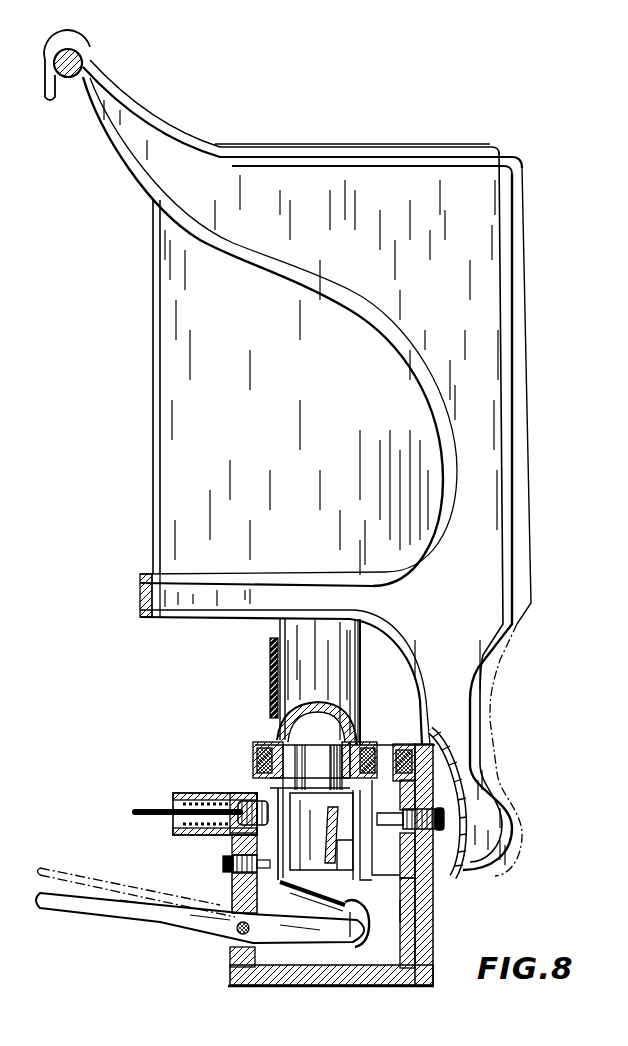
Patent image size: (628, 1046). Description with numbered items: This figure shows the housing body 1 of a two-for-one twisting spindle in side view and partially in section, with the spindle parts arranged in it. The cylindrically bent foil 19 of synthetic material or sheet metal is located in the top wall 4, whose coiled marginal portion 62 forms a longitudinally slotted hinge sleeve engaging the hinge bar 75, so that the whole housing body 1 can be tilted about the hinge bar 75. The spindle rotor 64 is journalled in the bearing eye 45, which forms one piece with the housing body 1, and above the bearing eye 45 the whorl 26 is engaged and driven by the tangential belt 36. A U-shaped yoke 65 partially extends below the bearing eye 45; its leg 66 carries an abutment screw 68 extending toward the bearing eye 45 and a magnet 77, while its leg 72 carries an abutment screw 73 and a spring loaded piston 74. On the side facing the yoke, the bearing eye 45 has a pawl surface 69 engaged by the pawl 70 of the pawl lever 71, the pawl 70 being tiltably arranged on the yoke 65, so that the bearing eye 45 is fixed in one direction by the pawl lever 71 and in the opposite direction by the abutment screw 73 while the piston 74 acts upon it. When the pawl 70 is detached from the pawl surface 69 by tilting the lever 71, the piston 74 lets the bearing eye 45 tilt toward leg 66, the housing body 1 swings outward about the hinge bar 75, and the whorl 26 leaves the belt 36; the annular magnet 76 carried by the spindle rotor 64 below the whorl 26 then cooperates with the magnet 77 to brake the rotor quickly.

The housing body 1 is at (536, 312).
The top wall 4 is at (302, 150).
The cylindrically bent foil 19 is at (178, 382).
The coiled portion 62 is at (77, 43).
The hinge bar 75 is at (65, 42).
The whorl 26 is at (300, 630).
The tangential belt 36 is at (270, 663).
The spindle rotor 64 is at (232, 684).
The leg 66 is at (423, 888).
The abutment screw 68 is at (437, 805).
The pawl surface 69 is at (370, 892).
The pawl 70 is at (353, 933).
The pawl lever 71 is at (133, 917).
The leg 72 is at (243, 890).
The abutment screw 73 is at (230, 868).
The spring loaded piston 74 is at (245, 803).
The annular magnet 76 is at (373, 748).
The magnet 77 is at (447, 752).
The bearing eye 45 is at (290, 835).
The U-shaped yoke 65 is at (271, 980).